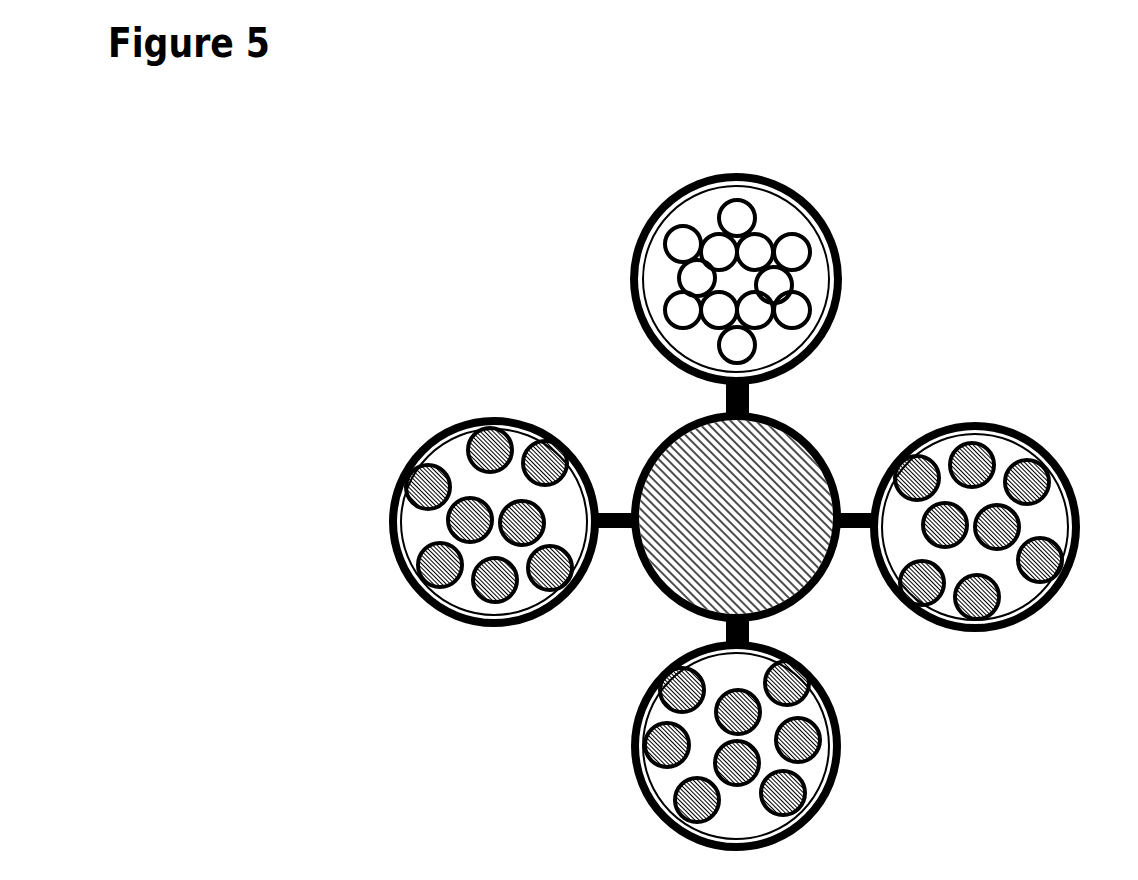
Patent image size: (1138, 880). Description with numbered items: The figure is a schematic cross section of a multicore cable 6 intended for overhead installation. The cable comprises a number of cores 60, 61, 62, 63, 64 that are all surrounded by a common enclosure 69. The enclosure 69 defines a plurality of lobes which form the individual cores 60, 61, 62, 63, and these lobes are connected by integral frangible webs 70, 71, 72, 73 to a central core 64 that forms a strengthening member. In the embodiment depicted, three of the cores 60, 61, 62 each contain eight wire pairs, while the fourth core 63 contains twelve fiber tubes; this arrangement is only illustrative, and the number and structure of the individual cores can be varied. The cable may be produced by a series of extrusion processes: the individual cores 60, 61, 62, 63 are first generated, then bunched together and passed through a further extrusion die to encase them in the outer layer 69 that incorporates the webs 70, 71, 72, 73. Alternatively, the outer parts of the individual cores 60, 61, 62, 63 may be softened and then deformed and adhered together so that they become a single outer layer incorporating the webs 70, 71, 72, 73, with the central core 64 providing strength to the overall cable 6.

The multicore cable 6 is at (735, 492).
The core 60 is at (760, 746).
The core 61 is at (999, 527).
The core 62 is at (471, 521).
The core 63 is at (736, 254).
The central core 64 is at (738, 512).
The common enclosure 69 is at (1006, 417).
The frangible web 70 is at (765, 630).
The frangible web 71 is at (856, 542).
The frangible web 72 is at (616, 541).
The frangible web 73 is at (719, 398).